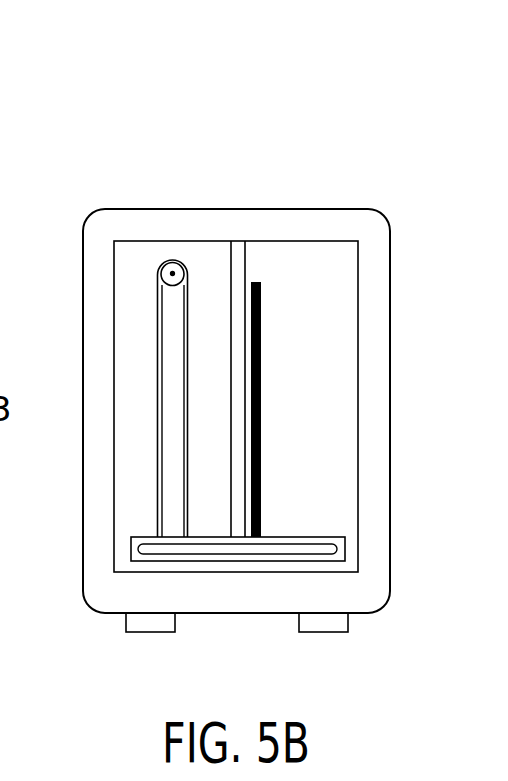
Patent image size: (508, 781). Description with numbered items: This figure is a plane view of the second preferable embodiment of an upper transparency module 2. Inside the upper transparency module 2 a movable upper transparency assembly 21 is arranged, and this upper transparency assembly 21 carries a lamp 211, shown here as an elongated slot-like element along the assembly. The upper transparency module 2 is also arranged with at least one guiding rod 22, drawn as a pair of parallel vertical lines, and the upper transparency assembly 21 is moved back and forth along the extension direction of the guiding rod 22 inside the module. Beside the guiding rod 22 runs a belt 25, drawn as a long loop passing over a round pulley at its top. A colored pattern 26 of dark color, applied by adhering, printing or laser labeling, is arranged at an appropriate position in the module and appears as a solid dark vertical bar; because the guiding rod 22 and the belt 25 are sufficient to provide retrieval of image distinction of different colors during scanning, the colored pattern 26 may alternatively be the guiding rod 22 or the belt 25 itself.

The upper transparency module 2 is at (243, 152).
The upper transparency assembly 21 is at (345, 543).
The lamp 211 is at (254, 548).
The guiding rod 22 is at (236, 264).
The belt 25 is at (158, 303).
The colored pattern 26 is at (248, 438).